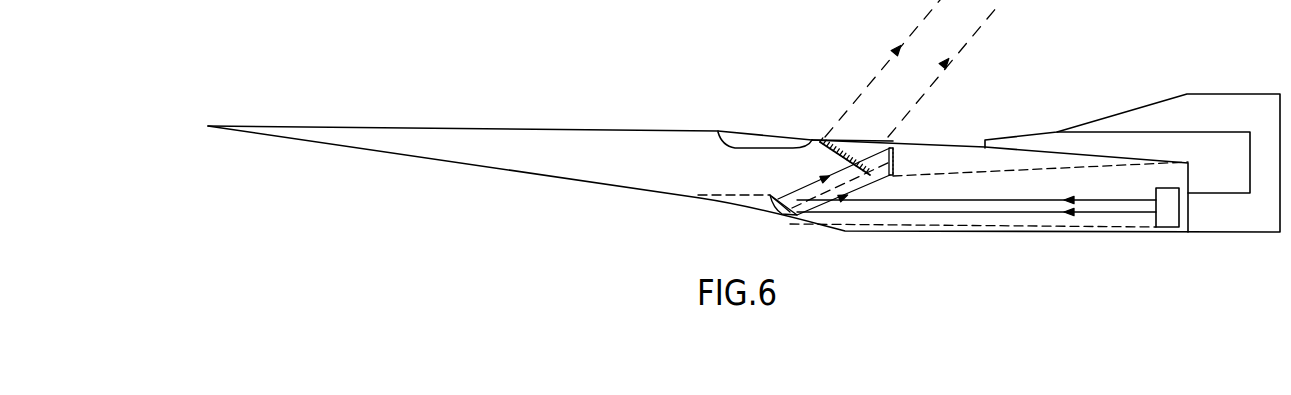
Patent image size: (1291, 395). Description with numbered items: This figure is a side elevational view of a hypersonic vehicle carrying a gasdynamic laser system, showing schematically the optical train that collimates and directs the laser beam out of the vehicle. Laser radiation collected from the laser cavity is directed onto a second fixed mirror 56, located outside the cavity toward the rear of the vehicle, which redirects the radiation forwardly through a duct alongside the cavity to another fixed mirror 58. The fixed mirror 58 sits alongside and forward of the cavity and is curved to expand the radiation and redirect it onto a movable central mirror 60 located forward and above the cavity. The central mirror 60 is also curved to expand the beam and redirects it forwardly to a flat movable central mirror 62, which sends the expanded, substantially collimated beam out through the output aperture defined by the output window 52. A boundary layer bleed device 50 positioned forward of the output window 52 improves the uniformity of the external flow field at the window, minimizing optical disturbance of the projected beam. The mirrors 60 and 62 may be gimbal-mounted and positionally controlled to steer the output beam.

The boundary layer bleed device 50 is at (784, 131).
The output window 52 is at (843, 137).
The second fixed mirror 56 is at (1157, 212).
The fixed mirror 58 is at (778, 216).
The movable central mirror 60 is at (895, 160).
The flat movable central mirror 62 is at (822, 152).